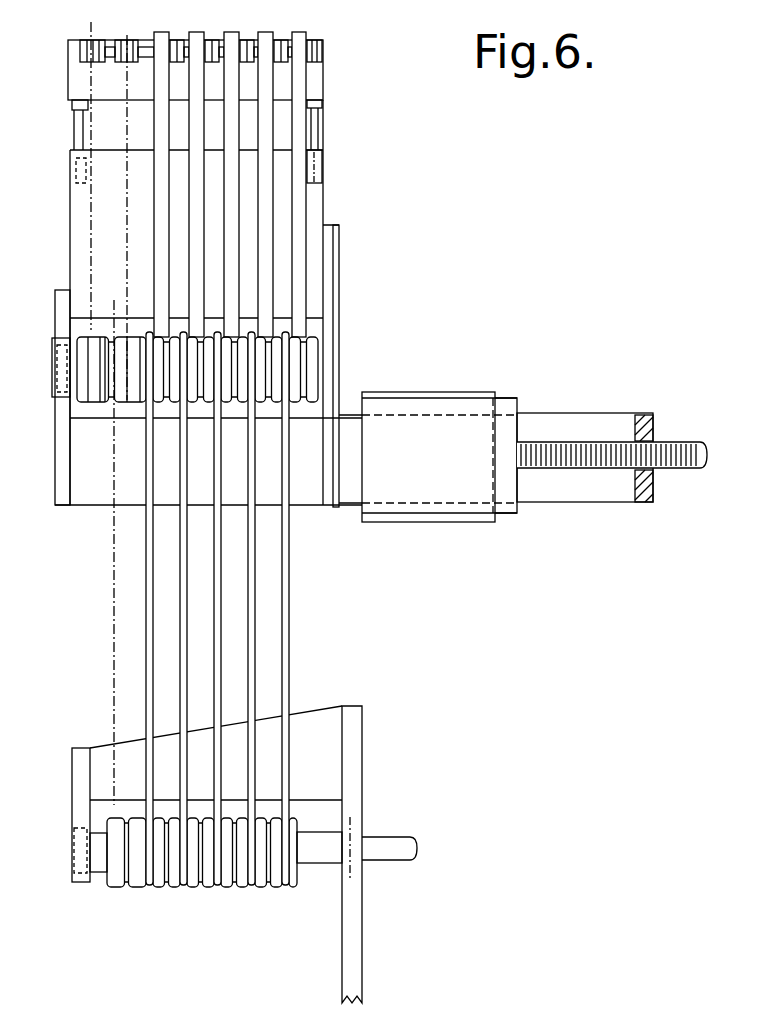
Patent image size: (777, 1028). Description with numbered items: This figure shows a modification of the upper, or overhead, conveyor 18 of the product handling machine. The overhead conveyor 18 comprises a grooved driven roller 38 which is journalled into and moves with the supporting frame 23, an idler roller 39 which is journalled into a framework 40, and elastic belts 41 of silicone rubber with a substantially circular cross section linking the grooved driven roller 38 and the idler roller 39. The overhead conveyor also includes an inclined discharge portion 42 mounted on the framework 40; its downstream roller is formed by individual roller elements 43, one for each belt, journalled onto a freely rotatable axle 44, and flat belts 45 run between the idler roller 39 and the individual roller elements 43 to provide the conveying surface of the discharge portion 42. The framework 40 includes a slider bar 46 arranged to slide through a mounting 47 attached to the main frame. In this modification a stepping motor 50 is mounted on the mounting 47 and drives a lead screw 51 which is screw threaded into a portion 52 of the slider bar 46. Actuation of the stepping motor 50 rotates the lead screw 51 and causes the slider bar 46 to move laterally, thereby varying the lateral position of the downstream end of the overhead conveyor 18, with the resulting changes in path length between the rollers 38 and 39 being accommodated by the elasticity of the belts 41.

The overhead conveyor 18 is at (287, 655).
The supporting frame 23 is at (353, 938).
The grooved driven roller 38 is at (322, 838).
The idler roller 39 is at (85, 392).
The framework 40 is at (330, 287).
The elastic belts 41 is at (252, 595).
The inclined discharge portion 42 is at (338, 225).
The individual roller elements 43 is at (315, 50).
The freely rotatable axle 44 is at (286, 33).
The flat belts 45 is at (302, 177).
The slider bar 46 is at (540, 423).
The mounting 47 is at (410, 392).
The stepping motor 50 is at (508, 517).
The lead screw 51 is at (670, 445).
The portion of the slider arm 52 is at (645, 487).